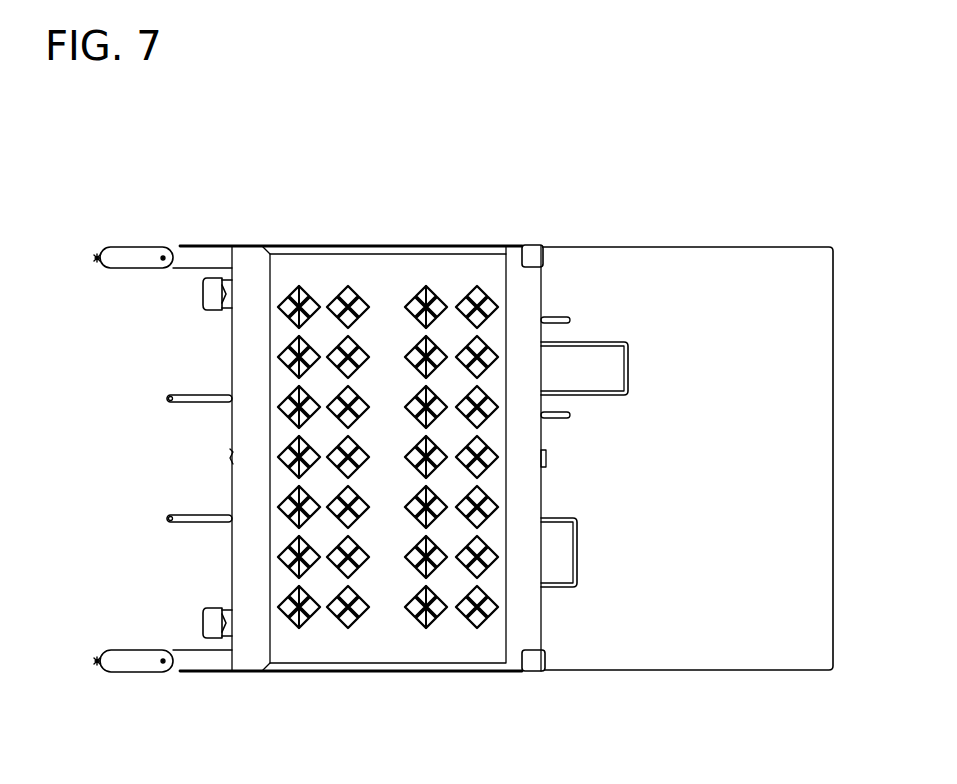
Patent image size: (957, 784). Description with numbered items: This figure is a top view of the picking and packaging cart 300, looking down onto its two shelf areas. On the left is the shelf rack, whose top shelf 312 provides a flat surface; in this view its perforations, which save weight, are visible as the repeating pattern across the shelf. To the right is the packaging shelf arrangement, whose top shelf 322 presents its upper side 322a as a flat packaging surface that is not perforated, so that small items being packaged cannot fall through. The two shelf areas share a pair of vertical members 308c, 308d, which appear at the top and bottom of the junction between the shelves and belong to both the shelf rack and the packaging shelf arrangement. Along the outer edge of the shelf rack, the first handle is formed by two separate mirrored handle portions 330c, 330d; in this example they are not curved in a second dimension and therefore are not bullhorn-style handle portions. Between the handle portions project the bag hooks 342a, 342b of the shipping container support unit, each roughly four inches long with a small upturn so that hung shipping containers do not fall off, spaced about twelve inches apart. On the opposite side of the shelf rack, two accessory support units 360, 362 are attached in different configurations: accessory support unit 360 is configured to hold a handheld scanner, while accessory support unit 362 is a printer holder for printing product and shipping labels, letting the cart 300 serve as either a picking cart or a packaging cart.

The picking and packaging cart 300 is at (620, 113).
The top shelf 312 is at (377, 246).
The vertical member 308c is at (530, 245).
The vertical member 308d is at (532, 672).
The top shelf 322 is at (775, 247).
The upper side 322a is at (745, 470).
The handle portion 330c is at (133, 246).
The handle portion 330d is at (147, 650).
The bag hook 342a is at (192, 396).
The bag hook 342b is at (192, 516).
The accessory support unit 360 is at (559, 518).
The accessory support unit 362 is at (604, 342).